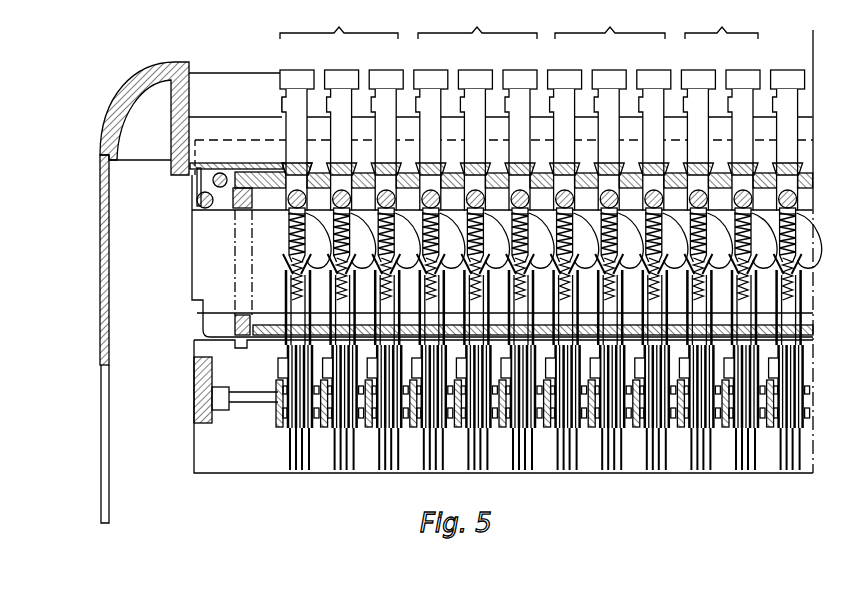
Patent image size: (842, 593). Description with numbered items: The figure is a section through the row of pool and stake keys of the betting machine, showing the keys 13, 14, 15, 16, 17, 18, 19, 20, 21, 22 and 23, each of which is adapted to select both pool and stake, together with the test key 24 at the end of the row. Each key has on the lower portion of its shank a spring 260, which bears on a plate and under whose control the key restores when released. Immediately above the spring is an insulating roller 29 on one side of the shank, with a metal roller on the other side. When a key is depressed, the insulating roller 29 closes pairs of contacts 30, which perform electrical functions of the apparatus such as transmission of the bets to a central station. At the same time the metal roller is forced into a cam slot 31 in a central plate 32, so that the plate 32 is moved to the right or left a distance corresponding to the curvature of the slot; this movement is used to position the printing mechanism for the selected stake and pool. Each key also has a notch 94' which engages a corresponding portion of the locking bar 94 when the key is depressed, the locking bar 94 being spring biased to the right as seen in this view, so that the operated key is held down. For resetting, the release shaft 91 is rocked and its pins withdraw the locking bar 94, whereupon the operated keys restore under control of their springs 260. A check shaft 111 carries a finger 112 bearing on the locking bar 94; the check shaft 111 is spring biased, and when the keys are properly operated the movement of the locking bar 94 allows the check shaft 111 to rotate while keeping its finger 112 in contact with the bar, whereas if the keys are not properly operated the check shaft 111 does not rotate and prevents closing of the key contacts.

The pool and stake key 13 is at (299, 64).
The pool and stake key 14 is at (344, 64).
The pool and stake key 15 is at (389, 64).
The pool and stake key 16 is at (433, 64).
The pool and stake key 17 is at (478, 64).
The pool and stake key 18 is at (522, 64).
The pool and stake key 19 is at (567, 64).
The pool and stake key 20 is at (612, 64).
The pool and stake key 21 is at (656, 64).
The pool and stake key 22 is at (701, 64).
The pool and stake key 23 is at (745, 64).
The test key 24 is at (790, 64).
The insulating roller 29 is at (288, 202).
The contacts 30 is at (305, 458).
The cam slot 31 is at (317, 239).
The central plate 32 is at (207, 213).
The release shaft 91 is at (233, 199).
The locking bar 94 is at (281, 148).
The notch 94' is at (246, 73).
The check shaft 111 is at (198, 198).
The finger 112 is at (200, 192).
The spring 260 is at (293, 237).